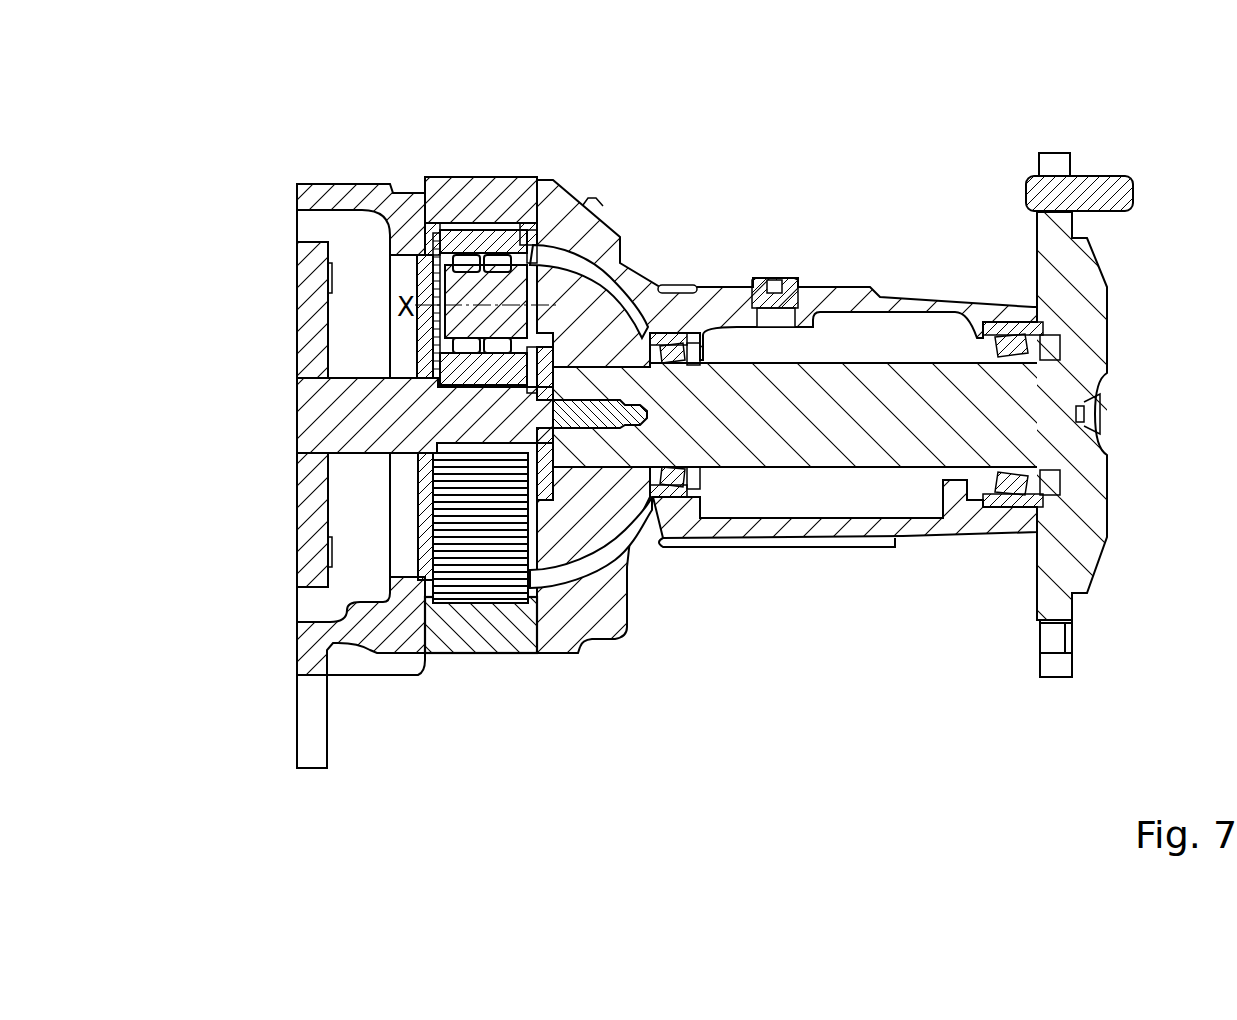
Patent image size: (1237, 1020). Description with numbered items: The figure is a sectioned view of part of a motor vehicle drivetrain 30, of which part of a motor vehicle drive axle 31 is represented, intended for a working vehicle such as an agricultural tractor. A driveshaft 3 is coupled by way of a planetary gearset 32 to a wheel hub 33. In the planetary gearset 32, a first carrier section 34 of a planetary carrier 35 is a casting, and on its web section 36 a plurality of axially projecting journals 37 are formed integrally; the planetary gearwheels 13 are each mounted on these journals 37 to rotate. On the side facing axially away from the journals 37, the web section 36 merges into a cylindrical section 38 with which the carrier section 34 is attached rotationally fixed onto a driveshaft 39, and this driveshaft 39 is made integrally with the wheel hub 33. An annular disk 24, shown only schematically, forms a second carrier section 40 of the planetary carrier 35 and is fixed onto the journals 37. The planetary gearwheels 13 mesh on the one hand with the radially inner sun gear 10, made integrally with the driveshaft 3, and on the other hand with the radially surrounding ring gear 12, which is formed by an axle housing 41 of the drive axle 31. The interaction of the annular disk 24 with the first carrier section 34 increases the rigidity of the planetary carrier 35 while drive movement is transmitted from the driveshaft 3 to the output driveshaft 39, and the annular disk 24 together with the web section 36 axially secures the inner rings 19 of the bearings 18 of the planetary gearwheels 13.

The driveshaft 3 is at (340, 410).
The sun gear 10 is at (437, 443).
The ring gear 12 is at (470, 627).
The planetary gearwheels 13 is at (490, 227).
The bearings 18 is at (462, 245).
The inner rings 19 is at (548, 308).
The annular disk 24 is at (440, 320).
The motor vehicle drivetrain 30 is at (588, 140).
The motor vehicle drive axle 31 is at (803, 193).
The planetary gearset 32 is at (480, 177).
The wheel hub 33 is at (1057, 166).
The first carrier section 34 is at (588, 255).
The planetary carrier 35 is at (532, 243).
The web section 36 is at (612, 283).
The journals 37 is at (445, 290).
The cylindrical section 38 is at (573, 490).
The driveshaft 39 is at (852, 433).
The second carrier section 40 is at (407, 278).
The axle housing 41 is at (726, 297).